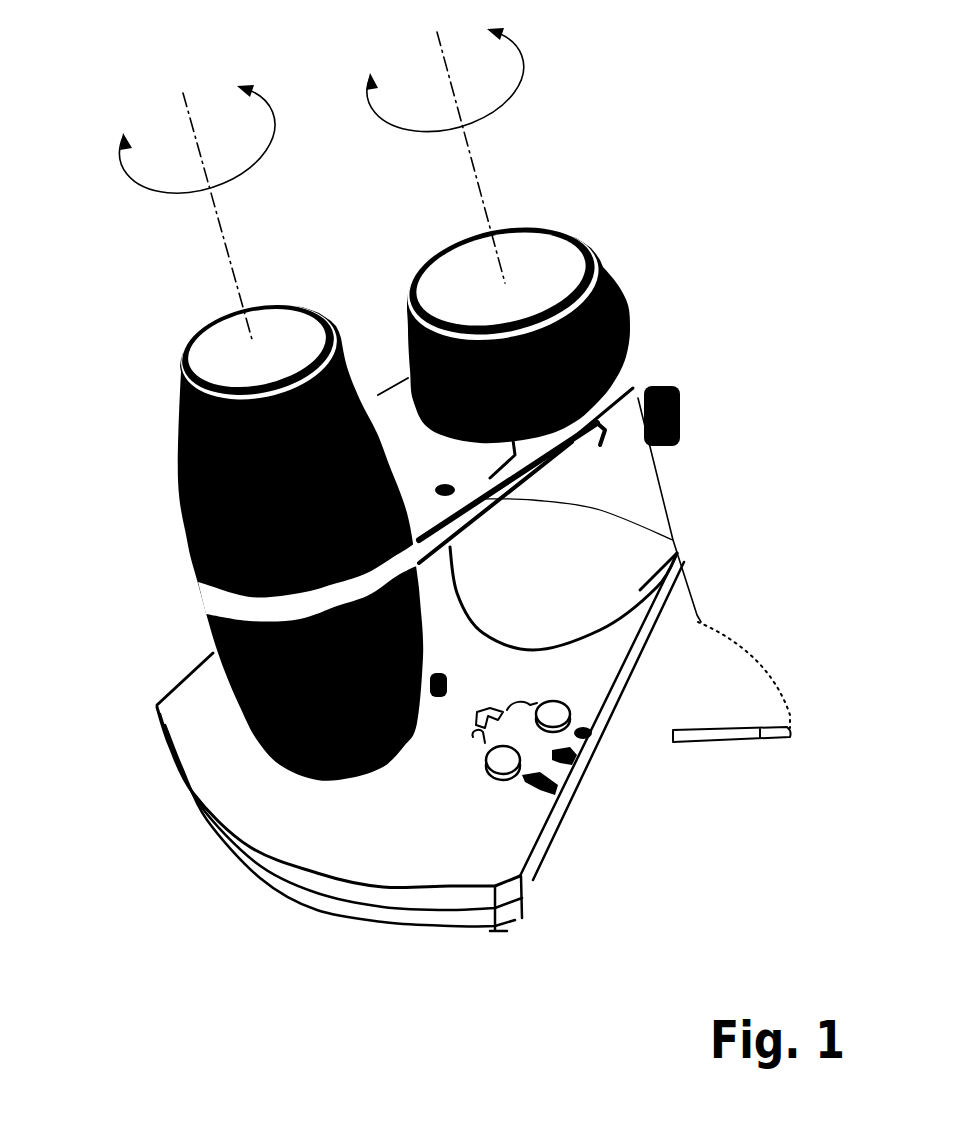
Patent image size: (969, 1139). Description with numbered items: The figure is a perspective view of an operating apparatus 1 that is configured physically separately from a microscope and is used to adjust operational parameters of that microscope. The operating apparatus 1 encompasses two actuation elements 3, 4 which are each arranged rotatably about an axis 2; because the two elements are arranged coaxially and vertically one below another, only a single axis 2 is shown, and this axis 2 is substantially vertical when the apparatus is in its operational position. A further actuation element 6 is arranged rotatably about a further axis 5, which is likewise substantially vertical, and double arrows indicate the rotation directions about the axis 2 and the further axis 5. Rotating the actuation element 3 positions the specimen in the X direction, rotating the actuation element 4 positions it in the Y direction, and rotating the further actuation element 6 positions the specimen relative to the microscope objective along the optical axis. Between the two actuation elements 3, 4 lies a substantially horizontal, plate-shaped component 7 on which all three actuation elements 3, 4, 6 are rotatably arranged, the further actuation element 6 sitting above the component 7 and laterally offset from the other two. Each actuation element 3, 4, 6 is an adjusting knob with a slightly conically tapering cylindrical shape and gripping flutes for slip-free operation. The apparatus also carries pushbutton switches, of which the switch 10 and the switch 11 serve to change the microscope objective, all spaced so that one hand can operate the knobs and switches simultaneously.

The operating apparatus 1 is at (480, 479).
The axis 2 is at (232, 263).
The actuation element 3 is at (180, 420).
The actuation element 4 is at (233, 683).
The further axis 5 is at (478, 180).
The further actuation element 6 is at (627, 338).
The component 7 is at (673, 540).
The switch 10 is at (573, 713).
The switch 11 is at (523, 767).